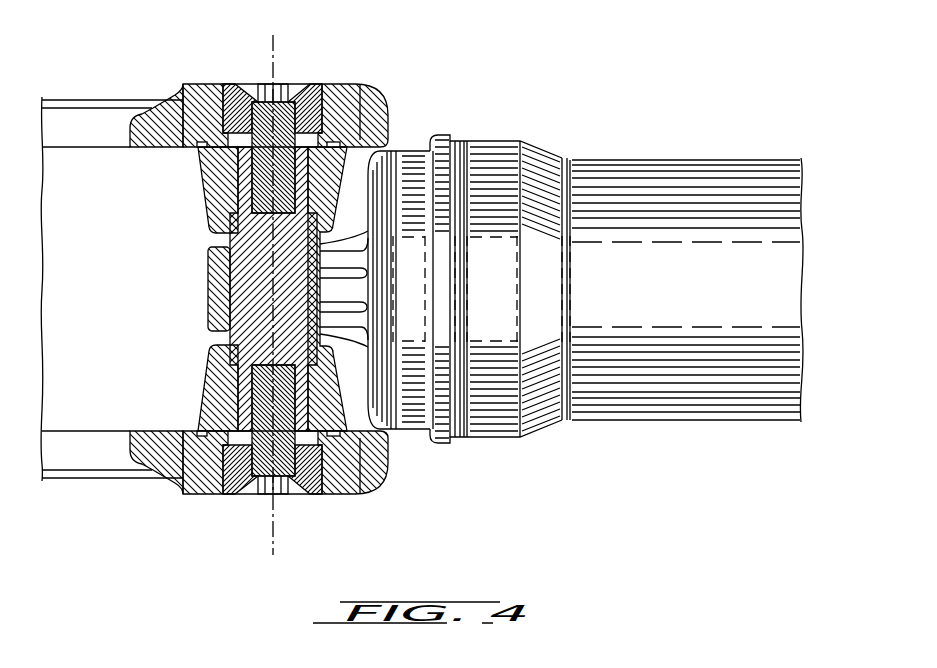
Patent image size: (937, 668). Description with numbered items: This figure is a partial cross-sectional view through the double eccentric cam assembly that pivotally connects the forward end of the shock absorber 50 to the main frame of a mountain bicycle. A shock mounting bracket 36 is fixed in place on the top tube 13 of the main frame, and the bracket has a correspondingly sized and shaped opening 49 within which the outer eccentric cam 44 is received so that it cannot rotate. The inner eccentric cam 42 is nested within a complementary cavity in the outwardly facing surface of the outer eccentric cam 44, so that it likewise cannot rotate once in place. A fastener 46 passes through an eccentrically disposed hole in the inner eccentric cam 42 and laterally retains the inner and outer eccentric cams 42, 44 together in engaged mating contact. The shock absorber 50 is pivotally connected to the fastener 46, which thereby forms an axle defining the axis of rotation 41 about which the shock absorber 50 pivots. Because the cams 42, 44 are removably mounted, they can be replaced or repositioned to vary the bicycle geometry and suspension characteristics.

The top tube 13 is at (75, 98).
The shock mounting bracket 36 is at (164, 126).
The fastener 46 is at (279, 84).
The shock absorber 50 is at (687, 180).
The opening 49 is at (193, 495).
The inner eccentric cam 42 is at (231, 495).
The axis of rotation 41 is at (276, 532).
The outer eccentric cam 44 is at (350, 494).